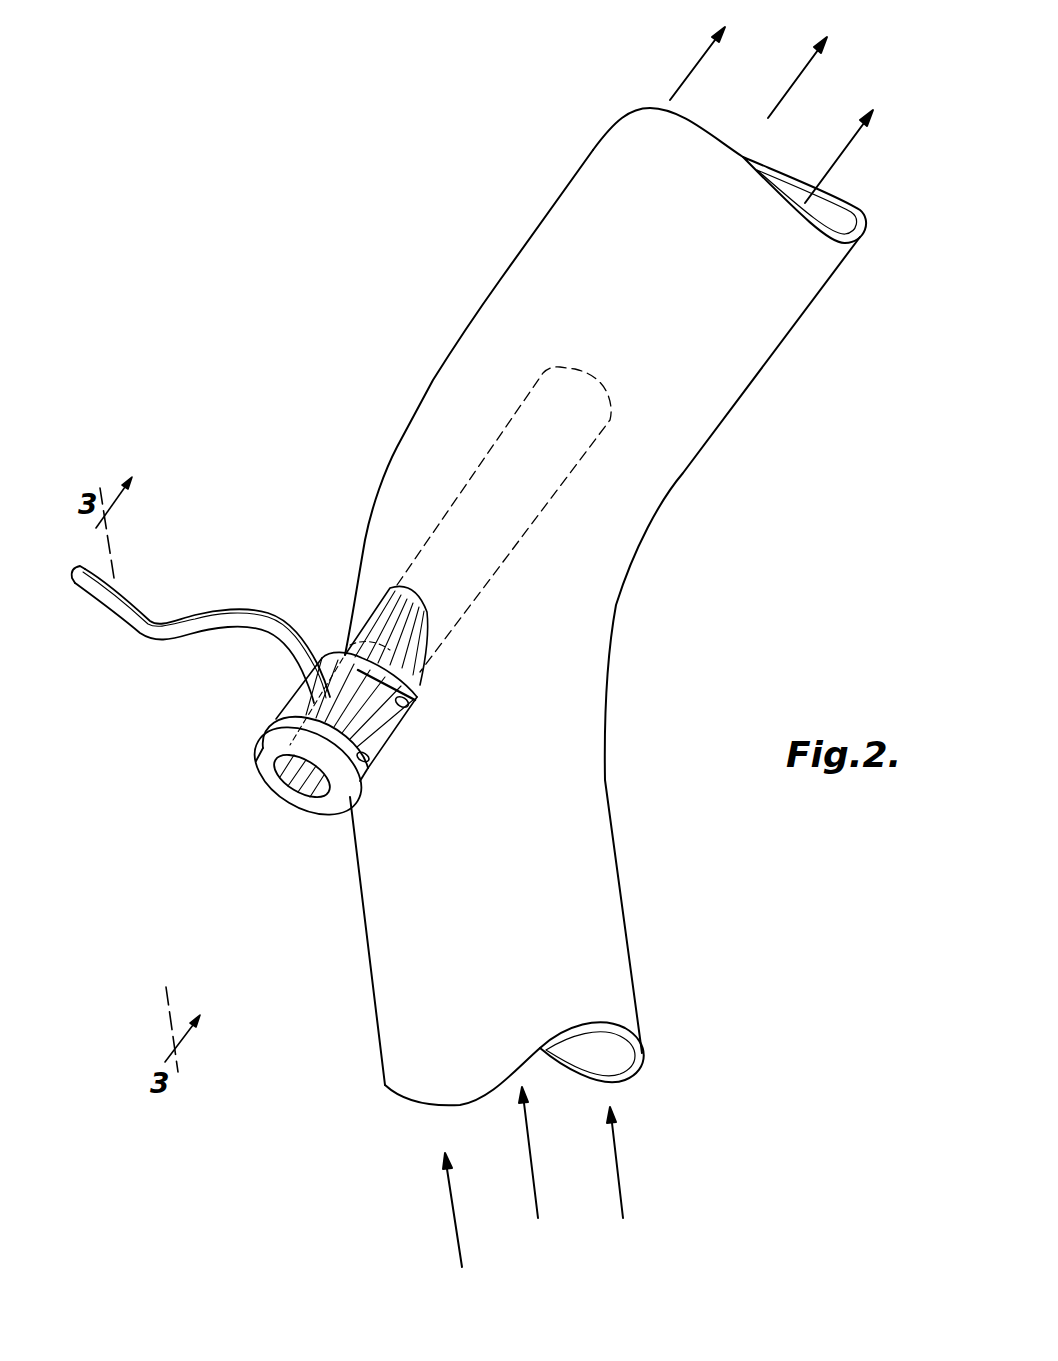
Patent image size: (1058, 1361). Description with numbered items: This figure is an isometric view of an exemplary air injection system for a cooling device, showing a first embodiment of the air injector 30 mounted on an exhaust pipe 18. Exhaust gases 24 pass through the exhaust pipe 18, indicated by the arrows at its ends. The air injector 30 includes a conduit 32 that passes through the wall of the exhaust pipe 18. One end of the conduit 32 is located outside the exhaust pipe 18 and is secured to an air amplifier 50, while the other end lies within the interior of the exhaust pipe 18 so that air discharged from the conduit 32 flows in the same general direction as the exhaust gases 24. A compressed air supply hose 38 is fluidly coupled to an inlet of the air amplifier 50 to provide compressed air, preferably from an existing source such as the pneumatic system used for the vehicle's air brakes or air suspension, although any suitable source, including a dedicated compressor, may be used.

The exhaust pipe 18 is at (590, 735).
The exhaust gases 24 is at (798, 78).
The air injector 30 is at (245, 709).
The conduit 32 is at (383, 618).
The compressed air supply hose 38 is at (210, 607).
The air amplifier 50 is at (312, 803).